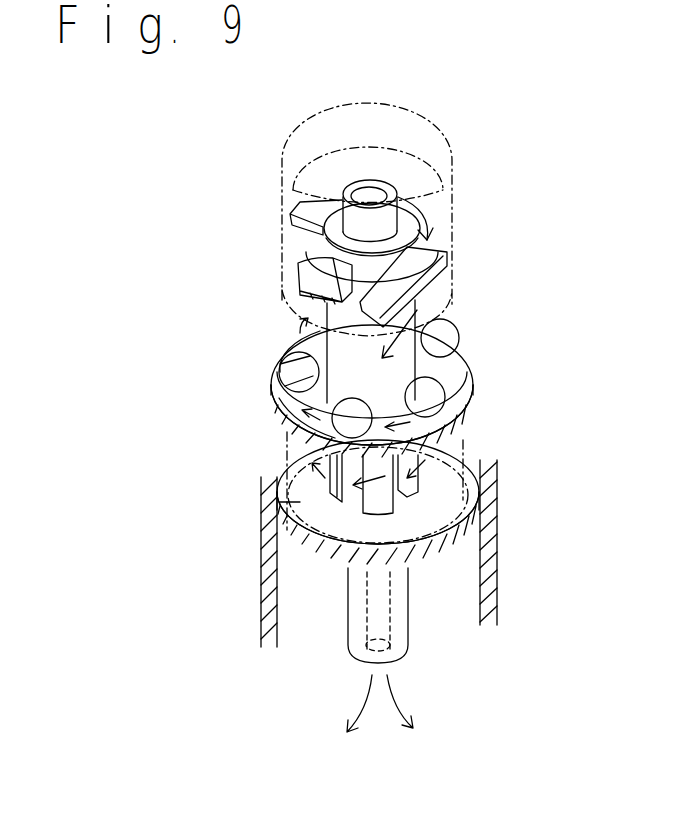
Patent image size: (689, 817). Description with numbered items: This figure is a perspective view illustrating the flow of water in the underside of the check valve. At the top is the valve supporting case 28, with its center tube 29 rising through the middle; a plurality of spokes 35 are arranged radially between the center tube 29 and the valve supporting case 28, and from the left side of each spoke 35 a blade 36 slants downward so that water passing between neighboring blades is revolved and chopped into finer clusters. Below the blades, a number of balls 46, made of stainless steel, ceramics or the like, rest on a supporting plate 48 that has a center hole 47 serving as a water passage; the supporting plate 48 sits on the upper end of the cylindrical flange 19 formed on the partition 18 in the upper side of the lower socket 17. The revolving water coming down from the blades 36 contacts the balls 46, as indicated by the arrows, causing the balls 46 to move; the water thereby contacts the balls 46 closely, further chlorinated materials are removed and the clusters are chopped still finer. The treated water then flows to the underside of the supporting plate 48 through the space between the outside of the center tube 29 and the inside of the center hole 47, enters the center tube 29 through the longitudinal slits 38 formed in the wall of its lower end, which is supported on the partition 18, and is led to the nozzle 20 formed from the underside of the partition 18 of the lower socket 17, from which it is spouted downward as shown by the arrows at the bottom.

The lower socket 17 is at (497, 578).
The partition 18 is at (300, 502).
The cylindrical flange 19 is at (465, 442).
The nozzle 20 is at (408, 640).
The valve supporting case 28 is at (433, 178).
The center tube 29 is at (445, 362).
The spokes 35 is at (400, 192).
The blade 36 is at (325, 206).
The longitudinal slits 38 is at (367, 497).
The balls 46 is at (453, 337).
The center hole 47 is at (295, 378).
The supporting plate 48 is at (283, 400).